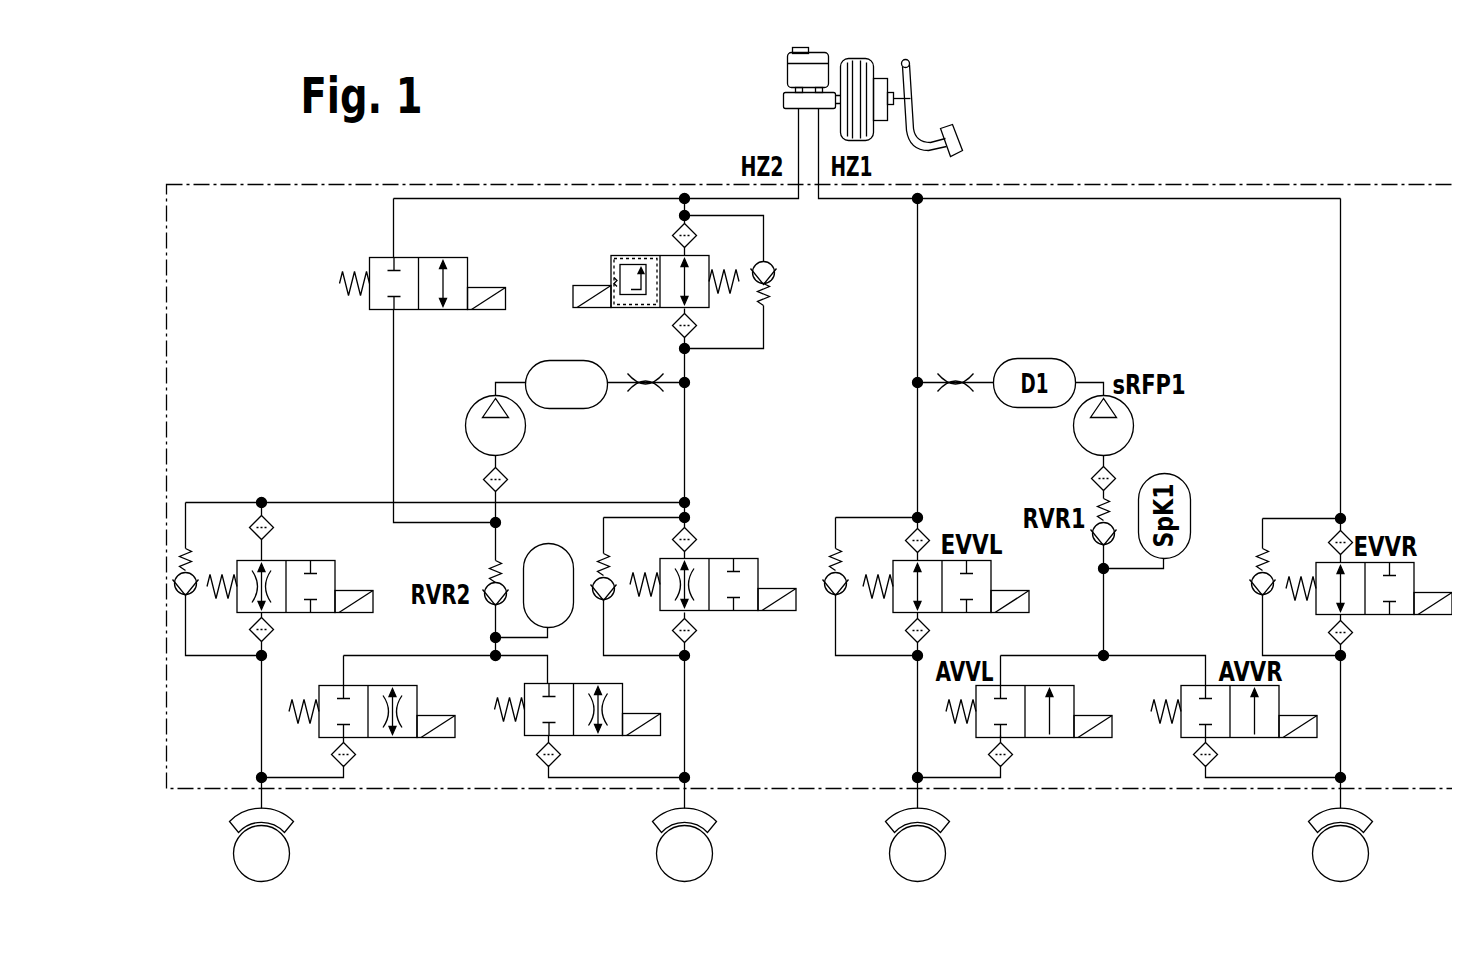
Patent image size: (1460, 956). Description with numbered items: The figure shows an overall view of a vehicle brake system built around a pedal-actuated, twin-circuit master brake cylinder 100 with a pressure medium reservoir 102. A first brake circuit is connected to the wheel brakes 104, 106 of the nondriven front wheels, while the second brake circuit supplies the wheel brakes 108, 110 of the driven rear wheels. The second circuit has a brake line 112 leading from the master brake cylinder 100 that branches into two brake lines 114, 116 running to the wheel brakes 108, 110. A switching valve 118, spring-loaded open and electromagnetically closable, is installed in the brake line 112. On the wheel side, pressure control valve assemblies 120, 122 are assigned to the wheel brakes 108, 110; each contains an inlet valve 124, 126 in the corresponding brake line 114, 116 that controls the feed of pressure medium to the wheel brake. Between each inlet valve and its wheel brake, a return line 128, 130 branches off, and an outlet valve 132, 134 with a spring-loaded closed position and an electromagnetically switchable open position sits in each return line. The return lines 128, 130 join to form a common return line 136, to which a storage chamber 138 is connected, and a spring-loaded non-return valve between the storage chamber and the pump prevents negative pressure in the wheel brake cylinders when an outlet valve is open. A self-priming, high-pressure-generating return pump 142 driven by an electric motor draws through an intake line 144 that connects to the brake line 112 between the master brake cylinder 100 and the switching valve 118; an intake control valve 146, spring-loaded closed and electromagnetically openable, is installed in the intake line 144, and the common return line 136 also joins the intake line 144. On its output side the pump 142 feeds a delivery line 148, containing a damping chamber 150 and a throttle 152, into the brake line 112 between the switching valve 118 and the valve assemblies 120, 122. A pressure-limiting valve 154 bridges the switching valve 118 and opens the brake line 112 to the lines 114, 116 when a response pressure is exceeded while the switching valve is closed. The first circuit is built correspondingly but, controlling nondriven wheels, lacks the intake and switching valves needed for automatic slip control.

The master brake cylinder 100 is at (856, 55).
The pressure medium reservoir 102 is at (790, 73).
The wheel brake 104 is at (1358, 852).
The wheel brake 106 is at (933, 852).
The wheel brake 108 is at (700, 852).
The wheel brake 110 is at (279, 853).
The brake line 112 is at (718, 197).
The brake line 114 is at (684, 712).
The brake line 116 is at (307, 502).
The switching valve 118 is at (610, 273).
The pressure control valve assembly 120 is at (768, 652).
The pressure control valve assembly 122 is at (238, 691).
The inlet valve 124 is at (747, 572).
The inlet valve 126 is at (335, 572).
The return line 128 is at (643, 775).
The return line 130 is at (303, 777).
The outlet valve 132 is at (533, 728).
The outlet valve 134 is at (400, 737).
The common return line 136 is at (492, 547).
The storage chamber 138 is at (545, 557).
The return pump 142 is at (482, 437).
The intake line 144 is at (393, 365).
The intake control valve 146 is at (463, 270).
The delivery line 148 is at (617, 387).
The damping chamber 150 is at (557, 363).
The throttle 152 is at (645, 393).
The pressure-limiting valve 154 is at (773, 290).